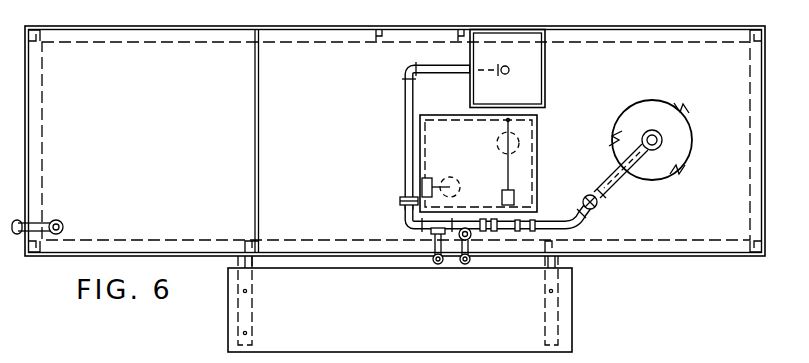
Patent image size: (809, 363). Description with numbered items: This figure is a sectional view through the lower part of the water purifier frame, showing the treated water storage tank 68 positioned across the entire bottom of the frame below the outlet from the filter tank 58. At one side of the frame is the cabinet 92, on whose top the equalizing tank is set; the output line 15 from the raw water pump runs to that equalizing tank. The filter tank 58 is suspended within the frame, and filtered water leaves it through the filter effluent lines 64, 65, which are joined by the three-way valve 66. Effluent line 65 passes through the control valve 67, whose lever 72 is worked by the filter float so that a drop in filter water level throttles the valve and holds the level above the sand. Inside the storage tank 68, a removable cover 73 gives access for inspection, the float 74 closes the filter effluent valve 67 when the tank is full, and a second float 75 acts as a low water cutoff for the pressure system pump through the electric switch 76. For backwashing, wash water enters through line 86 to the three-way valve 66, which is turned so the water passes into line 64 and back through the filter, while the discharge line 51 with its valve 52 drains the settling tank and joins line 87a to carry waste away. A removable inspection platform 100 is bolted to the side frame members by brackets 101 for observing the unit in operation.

The output line 15 is at (60, 224).
The line 51 is at (599, 201).
The valve 52 is at (598, 213).
The filter tank 58 is at (545, 73).
The filter effluent line 64 is at (405, 112).
The filter effluent line 65 is at (497, 233).
The three-way valve 66 is at (403, 224).
The control valve 67 is at (502, 197).
The treated water storage tank 68 is at (727, 92).
The lever 72 is at (511, 175).
The removable cover 73 is at (533, 122).
The float 74 is at (519, 146).
The second float 75 is at (450, 177).
The electric switch 76 is at (428, 177).
The line 86 is at (437, 266).
The line 87a is at (466, 266).
The cabinet 92 is at (255, 120).
The removable inspection platform 100 is at (400, 310).
The brackets 101 is at (242, 265).